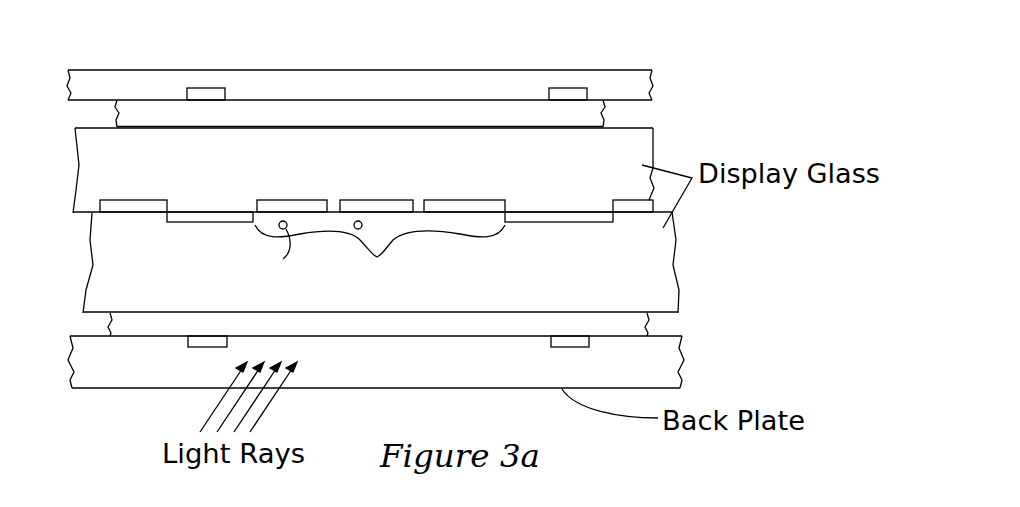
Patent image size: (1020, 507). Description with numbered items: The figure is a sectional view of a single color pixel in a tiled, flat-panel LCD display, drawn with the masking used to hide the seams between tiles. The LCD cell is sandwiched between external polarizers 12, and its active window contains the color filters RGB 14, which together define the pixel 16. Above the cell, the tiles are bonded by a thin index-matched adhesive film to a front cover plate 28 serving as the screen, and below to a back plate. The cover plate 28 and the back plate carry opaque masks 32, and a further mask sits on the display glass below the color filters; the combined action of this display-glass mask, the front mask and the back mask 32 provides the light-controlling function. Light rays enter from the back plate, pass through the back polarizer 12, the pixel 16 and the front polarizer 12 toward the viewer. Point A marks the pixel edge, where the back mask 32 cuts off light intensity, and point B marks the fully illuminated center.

The cover plate 28 is at (487, 70).
The opaque masks 32 is at (225, 88).
The external polarizers 12 is at (582, 112).
The color filters RGB 14 is at (480, 200).
The pixel 16 is at (380, 254).